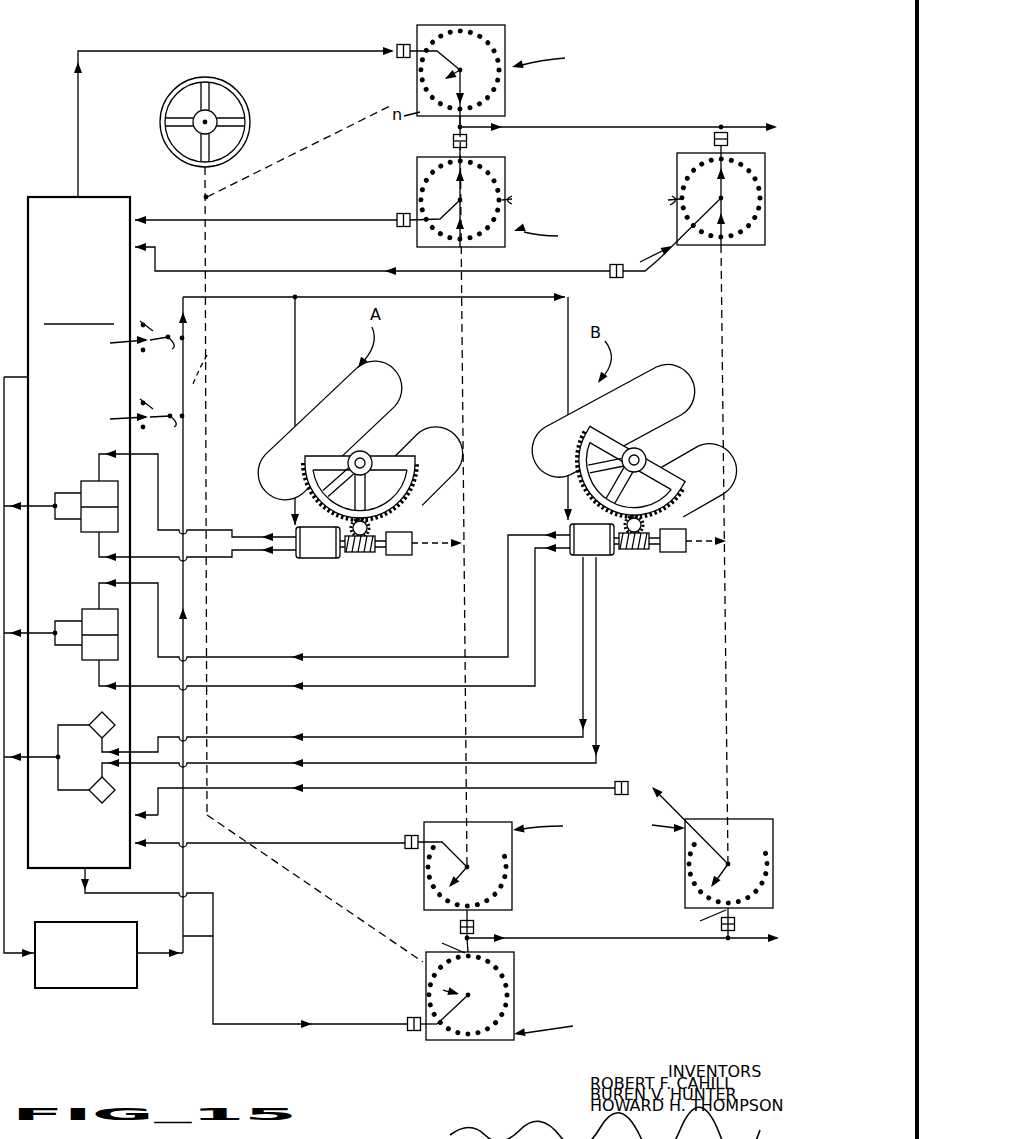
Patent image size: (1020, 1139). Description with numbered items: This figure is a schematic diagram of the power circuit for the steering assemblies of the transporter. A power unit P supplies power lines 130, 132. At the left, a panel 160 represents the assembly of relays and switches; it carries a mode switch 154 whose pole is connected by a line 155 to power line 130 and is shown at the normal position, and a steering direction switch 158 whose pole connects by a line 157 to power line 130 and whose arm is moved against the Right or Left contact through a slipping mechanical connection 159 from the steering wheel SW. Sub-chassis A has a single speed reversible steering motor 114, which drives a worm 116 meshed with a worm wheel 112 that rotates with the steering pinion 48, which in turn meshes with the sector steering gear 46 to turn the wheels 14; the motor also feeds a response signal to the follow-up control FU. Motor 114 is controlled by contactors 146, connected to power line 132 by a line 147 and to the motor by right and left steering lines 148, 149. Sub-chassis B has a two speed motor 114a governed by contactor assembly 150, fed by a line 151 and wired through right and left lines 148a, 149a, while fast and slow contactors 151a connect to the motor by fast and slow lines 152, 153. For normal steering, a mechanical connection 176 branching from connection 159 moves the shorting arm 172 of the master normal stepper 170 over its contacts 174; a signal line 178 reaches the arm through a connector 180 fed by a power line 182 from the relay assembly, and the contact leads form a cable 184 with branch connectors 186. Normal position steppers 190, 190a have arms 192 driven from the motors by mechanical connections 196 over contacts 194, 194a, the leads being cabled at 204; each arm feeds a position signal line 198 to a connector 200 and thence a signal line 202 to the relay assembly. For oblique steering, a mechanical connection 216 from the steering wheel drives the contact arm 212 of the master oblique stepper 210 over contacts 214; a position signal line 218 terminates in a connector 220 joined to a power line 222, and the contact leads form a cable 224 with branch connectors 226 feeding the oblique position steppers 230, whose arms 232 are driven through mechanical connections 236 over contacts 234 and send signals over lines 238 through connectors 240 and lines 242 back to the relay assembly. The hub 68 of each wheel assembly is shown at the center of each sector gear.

The assembly of relays and switches 160 is at (47, 205).
The mode switch 154 is at (168, 332).
The line 155 is at (176, 347).
The line 157 is at (172, 416).
The steering direction switch 158 is at (178, 426).
The mechanical connection 159 is at (207, 358).
The power line 222 is at (113, 51).
The position signal line 218 is at (398, 46).
The connector 220 is at (397, 57).
The contacts 214 is at (421, 86).
The master oblique stepper switch 210 is at (522, 37).
The contact arm 212 is at (462, 89).
The cable 224 is at (610, 124).
The mechanical connection 216 is at (332, 132).
The steering wheel SW is at (160, 122).
The branch cable connectors 226 is at (468, 143).
The oblique position stepper switch 230 is at (407, 166).
The switch arm 232 is at (462, 186).
The contacts 234 is at (591, 203).
The connector 240 is at (398, 212).
The position signal line 242 is at (283, 224).
The switch arm position signal line 238 is at (418, 226).
The mechanical connection 236 is at (463, 349).
The wheels 14 is at (385, 404).
The sector steering gear 46 is at (545, 447).
The blade shafts 68 is at (358, 452).
The steering pinion 48 is at (372, 529).
The steering motor 114 is at (312, 558).
The two speed steering motor 114a is at (570, 530).
The worm wheel 112 is at (355, 554).
The worm 116 is at (385, 556).
The steering follow-up control FU is at (405, 556).
The right steering line 148 is at (222, 530).
The left steering line 149 is at (232, 557).
The contactors or starters 146 is at (83, 478).
The line 147 is at (53, 520).
The contactor assembly 150 is at (83, 606).
The line 151 is at (53, 646).
The line 151a is at (40, 757).
The right steering line 148a is at (242, 656).
The left steering line 149a is at (266, 688).
The fast line 152 is at (272, 736).
The slow line 153 is at (262, 762).
The mechanical connection 196 is at (460, 620).
The signal line 202 is at (478, 789).
The connector 200 is at (404, 838).
The position signal line 198 is at (434, 836).
The normal position stepper switch 190 is at (414, 856).
The normal position stepper switch 190a is at (780, 791).
The switch arm 192 is at (447, 880).
The contacts 194 is at (500, 868).
The contacts 194a is at (707, 893).
The cable 204 is at (512, 912).
The branch cable connectors 186 is at (460, 927).
The cable 184 is at (558, 926).
The master normal stepper switch 170 is at (417, 965).
The rotary switch arm 172 is at (440, 992).
The contacts 174 is at (505, 994).
The connector 180 is at (408, 1030).
The signal line 178 is at (426, 1040).
The power line 182 is at (238, 1024).
The power line 130 is at (165, 912).
The power line 132 is at (8, 898).
The power unit P is at (68, 988).
The mechanical connection 176 is at (295, 870).